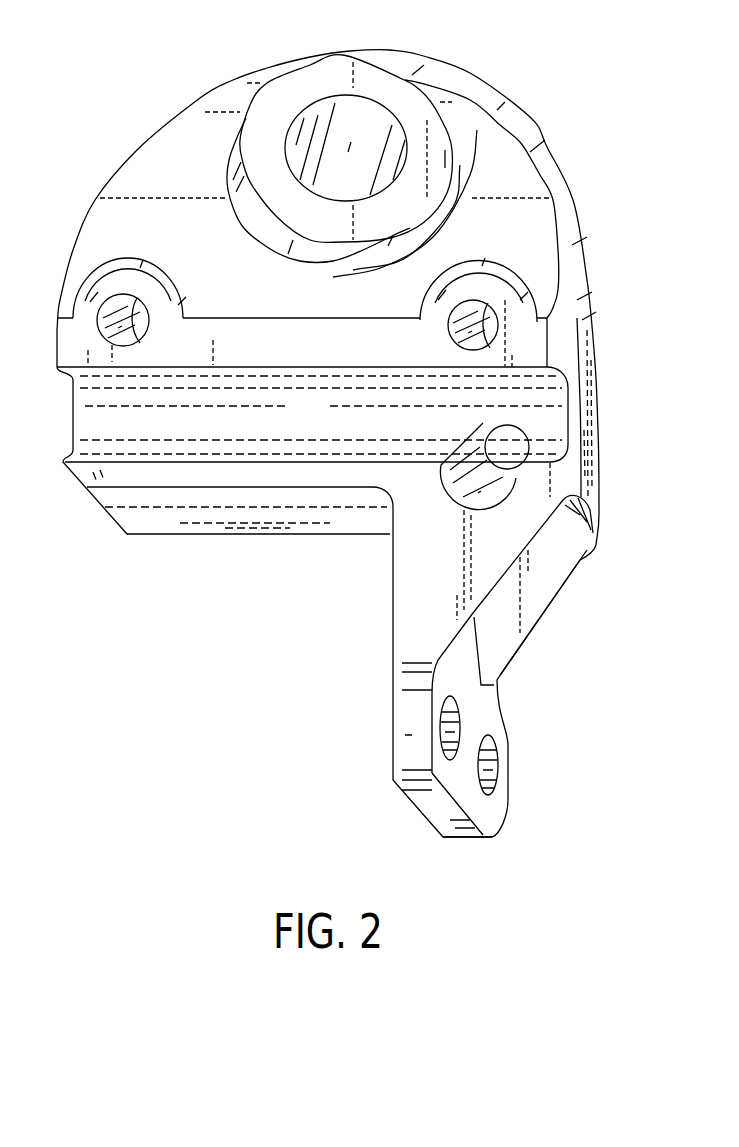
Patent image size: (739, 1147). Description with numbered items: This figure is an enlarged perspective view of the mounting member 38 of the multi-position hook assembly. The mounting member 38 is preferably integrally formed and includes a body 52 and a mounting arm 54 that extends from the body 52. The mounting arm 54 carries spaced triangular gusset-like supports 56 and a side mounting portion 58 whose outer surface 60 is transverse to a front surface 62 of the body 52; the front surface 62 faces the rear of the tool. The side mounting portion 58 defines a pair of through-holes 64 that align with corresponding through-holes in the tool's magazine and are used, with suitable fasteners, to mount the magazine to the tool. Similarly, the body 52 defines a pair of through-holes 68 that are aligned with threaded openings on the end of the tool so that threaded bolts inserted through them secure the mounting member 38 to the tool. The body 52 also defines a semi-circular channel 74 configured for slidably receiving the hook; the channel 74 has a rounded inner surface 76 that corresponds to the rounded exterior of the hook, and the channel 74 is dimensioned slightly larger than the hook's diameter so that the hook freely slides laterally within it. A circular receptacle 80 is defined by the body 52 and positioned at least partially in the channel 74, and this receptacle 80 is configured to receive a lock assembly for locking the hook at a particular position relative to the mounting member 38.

The mounting member 38 is at (318, 447).
The body 52 is at (527, 178).
The mounting arm 54 is at (525, 673).
The triangular gusset-like supports 56 is at (513, 613).
The side mounting portion 58 is at (458, 797).
The outer surface 60 is at (493, 715).
The front surface 62 is at (120, 193).
The through-holes 64 is at (450, 738).
The through-holes 68 is at (131, 331).
The semi-circular channel 74 is at (90, 416).
The rounded inner surface 76 is at (326, 420).
The circular receptacle 80 is at (503, 437).